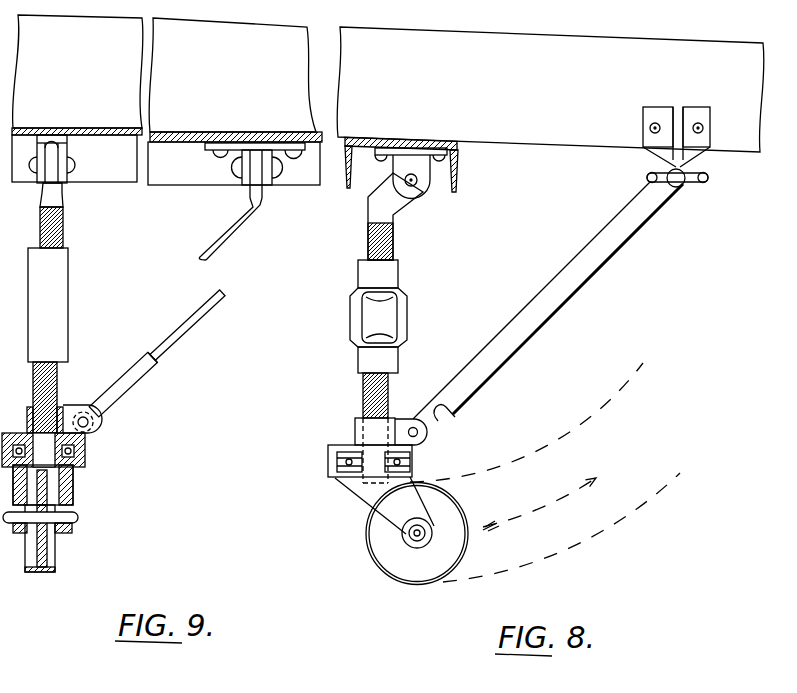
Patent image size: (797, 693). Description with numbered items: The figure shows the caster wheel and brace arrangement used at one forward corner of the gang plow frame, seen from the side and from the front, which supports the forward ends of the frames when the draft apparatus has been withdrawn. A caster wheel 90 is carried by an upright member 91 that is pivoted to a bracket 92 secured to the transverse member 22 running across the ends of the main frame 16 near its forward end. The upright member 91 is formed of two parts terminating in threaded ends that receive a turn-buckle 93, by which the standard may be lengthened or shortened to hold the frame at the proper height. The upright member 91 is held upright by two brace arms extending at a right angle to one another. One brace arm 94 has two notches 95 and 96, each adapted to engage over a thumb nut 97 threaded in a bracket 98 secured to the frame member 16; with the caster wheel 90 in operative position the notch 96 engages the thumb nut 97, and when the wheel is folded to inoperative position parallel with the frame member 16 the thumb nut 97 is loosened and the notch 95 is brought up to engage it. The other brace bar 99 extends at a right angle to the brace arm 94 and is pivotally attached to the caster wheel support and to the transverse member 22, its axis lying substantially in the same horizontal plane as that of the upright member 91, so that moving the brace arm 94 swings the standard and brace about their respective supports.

In FIG. 9, the main frame 16 is at (167, 100).
In FIG. 8, the main frame 16 is at (550, 89).
In FIG. 8, the transverse member 22 is at (457, 152).
In FIG. 9, the caster wheel 90 is at (53, 563).
In FIG. 8, the caster wheel 90 is at (390, 550).
In FIG. 9, the upright member 91 is at (55, 211).
In FIG. 8, the upright member 91 is at (372, 235).
In FIG. 9, the bracket 92 is at (67, 147).
In FIG. 8, the bracket 92 is at (417, 165).
In FIG. 9, the turn-buckle 93 is at (60, 300).
In FIG. 8, the turn-buckle 93 is at (355, 319).
In FIG. 8, the brace arm 94 is at (517, 338).
In FIG. 8, the notch 95 is at (447, 413).
In FIG. 8, the notch 96 is at (683, 187).
In FIG. 8, the thumb nut 97 is at (703, 182).
In FIG. 8, the bracket 98 is at (658, 143).
In FIG. 9, the brace bar 99 is at (160, 352).